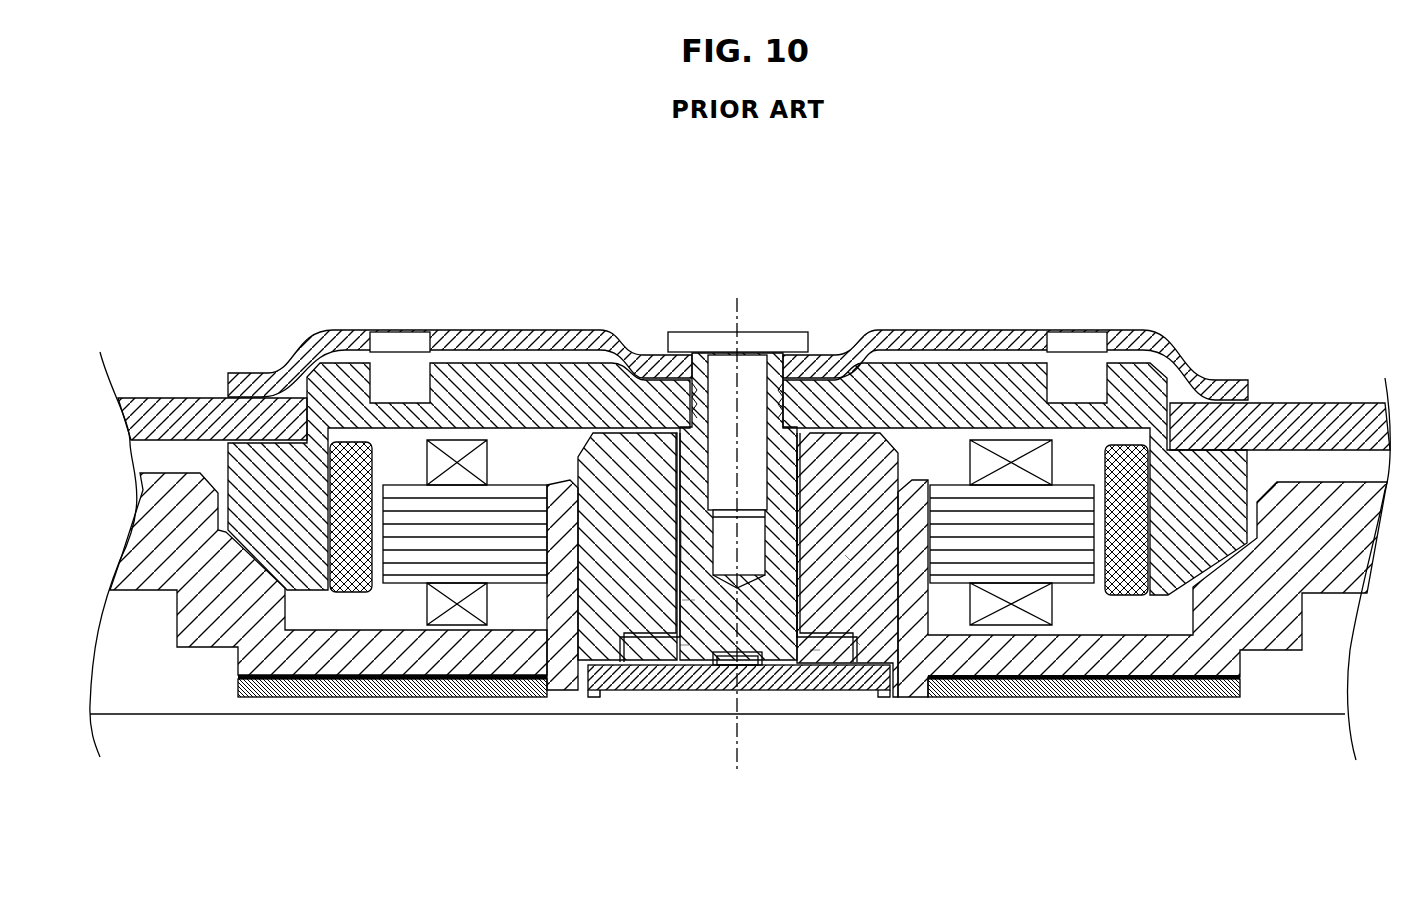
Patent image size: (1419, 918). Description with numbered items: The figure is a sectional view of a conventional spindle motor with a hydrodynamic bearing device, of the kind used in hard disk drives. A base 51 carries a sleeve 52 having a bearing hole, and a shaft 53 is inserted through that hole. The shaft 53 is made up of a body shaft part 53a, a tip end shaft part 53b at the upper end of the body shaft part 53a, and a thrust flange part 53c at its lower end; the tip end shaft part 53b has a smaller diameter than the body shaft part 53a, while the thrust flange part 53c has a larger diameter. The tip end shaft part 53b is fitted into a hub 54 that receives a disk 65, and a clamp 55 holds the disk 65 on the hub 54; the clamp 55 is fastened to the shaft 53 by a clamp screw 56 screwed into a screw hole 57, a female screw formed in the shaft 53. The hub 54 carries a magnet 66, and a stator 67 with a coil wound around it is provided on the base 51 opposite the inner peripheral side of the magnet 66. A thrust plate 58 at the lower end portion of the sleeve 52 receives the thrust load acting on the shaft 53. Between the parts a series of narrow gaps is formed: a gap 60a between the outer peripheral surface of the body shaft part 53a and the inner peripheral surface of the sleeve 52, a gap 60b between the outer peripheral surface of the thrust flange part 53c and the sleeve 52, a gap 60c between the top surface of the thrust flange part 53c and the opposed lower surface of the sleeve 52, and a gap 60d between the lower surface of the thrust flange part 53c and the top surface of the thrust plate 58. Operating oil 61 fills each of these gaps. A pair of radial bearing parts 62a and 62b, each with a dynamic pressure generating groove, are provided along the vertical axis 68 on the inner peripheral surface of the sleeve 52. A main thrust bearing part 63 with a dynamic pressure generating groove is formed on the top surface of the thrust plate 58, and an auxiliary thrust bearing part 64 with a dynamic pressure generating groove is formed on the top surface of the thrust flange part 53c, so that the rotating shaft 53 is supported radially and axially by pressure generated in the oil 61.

The base 51 is at (370, 660).
The sleeve 52 is at (617, 480).
The shaft 53 is at (700, 640).
The body shaft part 53a is at (880, 446).
The tip end shaft part 53b is at (812, 392).
The thrust flange part 53c is at (640, 650).
The hub 54 is at (575, 385).
The clamp 55 is at (495, 328).
The clamp screw 56 is at (760, 332).
The screw hole 57 is at (775, 675).
The thrust plate 58 is at (634, 658).
The gap 60a is at (845, 555).
The gap 60b is at (820, 658).
The gap 60c is at (858, 643).
The gap 60d is at (775, 660).
The operating oil 61 is at (748, 586).
The radial bearing part 62a is at (658, 475).
The radial bearing part 62b is at (663, 535).
The main thrust bearing part 63 is at (704, 615).
The auxiliary thrust bearing part 64 is at (583, 697).
The disk 65 is at (165, 398).
The magnet 66 is at (1122, 573).
The stator 67 is at (1068, 563).
The axis 68 is at (733, 307).